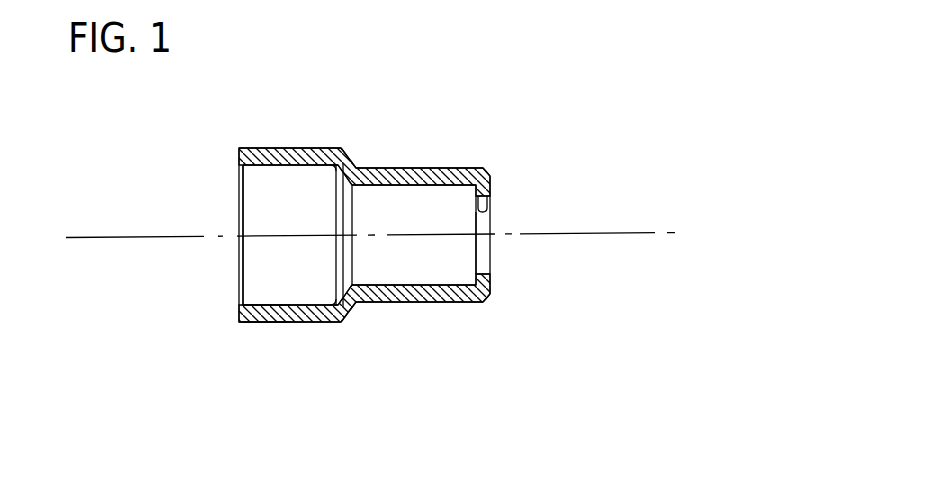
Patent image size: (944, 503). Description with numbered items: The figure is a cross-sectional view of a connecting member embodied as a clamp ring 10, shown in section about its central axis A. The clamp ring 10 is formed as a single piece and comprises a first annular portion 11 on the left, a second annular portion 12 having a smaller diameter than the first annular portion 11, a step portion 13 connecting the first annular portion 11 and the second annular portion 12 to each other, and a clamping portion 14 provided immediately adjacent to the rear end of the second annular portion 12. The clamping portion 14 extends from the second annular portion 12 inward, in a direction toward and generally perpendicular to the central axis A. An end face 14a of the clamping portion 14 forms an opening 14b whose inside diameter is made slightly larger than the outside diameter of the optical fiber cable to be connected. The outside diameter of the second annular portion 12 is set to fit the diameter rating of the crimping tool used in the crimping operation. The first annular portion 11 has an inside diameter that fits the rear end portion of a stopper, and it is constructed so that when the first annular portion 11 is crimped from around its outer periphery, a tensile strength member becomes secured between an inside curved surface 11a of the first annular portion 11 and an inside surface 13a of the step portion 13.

The clamp ring 10 is at (393, 139).
The first annular portion 11 is at (290, 323).
The inside curved surface 11a is at (272, 308).
The second annular portion 12 is at (466, 301).
The step portion 13 is at (358, 305).
The inside surface 13a is at (340, 306).
The clamping portion 14 is at (490, 180).
The end face 14a is at (488, 215).
The opening 14b is at (482, 252).
The central axis A is at (162, 238).